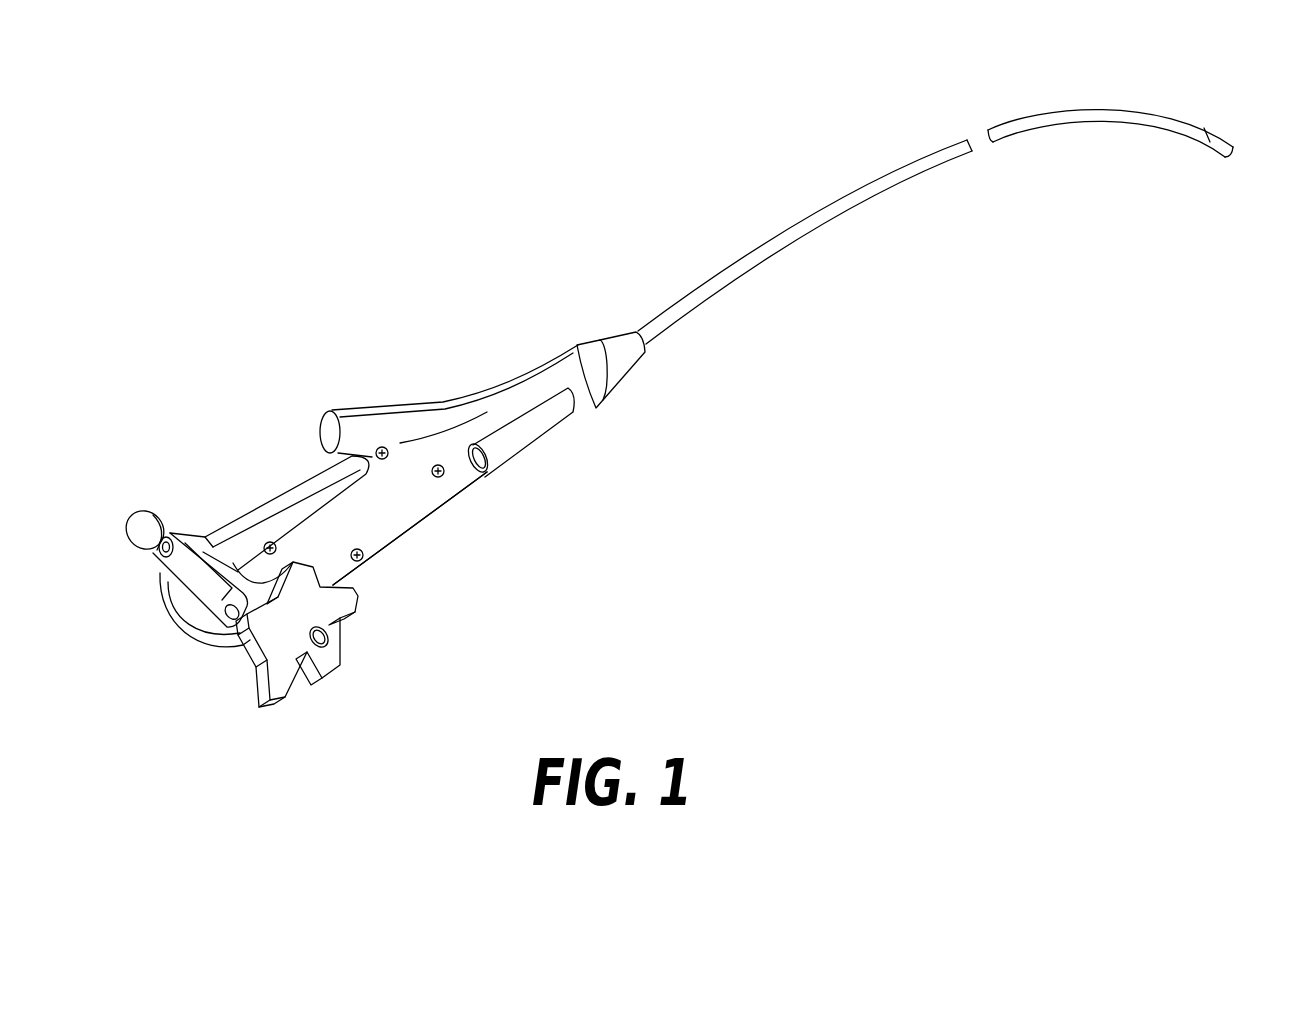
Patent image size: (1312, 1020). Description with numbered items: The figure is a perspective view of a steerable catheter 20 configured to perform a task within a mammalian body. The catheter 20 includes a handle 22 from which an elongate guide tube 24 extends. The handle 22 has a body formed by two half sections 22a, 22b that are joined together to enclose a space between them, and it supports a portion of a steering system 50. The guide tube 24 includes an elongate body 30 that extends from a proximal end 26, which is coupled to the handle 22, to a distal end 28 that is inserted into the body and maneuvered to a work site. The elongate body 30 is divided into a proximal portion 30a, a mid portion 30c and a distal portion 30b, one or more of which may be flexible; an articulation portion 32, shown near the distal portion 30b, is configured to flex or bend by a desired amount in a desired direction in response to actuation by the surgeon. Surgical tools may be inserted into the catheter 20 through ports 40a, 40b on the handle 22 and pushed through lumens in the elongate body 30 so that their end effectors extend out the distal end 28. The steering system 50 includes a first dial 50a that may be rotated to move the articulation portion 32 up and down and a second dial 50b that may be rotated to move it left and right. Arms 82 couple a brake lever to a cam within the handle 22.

The steerable catheter 20 is at (645, 158).
The handle 22 is at (443, 388).
The half section 22a is at (290, 497).
The half section 22b is at (237, 511).
The guide tube 24 is at (875, 128).
The proximal end 26 is at (650, 345).
The distal end 28 is at (1235, 147).
The elongate body 30 is at (907, 177).
The proximal portion 30a is at (803, 250).
The distal portion 30b is at (1225, 164).
The mid portion 30c is at (986, 150).
The articulation portion 32 is at (1213, 128).
The port 40a is at (332, 411).
The port 40b is at (487, 478).
The steering system 50 is at (288, 740).
The first dial 50a is at (263, 692).
The second dial 50b is at (340, 623).
The arms 82 is at (163, 570).